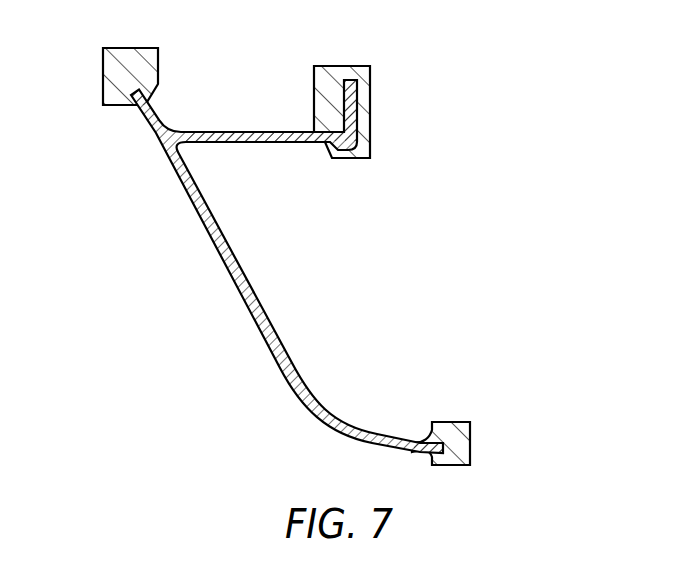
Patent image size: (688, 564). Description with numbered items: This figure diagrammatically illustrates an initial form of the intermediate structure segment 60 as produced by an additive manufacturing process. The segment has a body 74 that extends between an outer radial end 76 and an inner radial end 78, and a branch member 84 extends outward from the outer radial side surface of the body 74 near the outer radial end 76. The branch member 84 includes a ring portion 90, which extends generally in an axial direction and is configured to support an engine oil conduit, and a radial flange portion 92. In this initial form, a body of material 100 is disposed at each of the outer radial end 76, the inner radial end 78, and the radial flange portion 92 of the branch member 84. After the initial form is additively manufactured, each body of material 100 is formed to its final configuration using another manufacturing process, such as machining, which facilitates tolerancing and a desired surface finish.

The intermediate structure segment 60 is at (337, 243).
The body 74 is at (289, 256).
The outer radial end 76 is at (130, 90).
The inner radial end 78 is at (445, 449).
The branch member 84 is at (386, 104).
The ring portion 90 is at (278, 138).
The radial flange portion 92 is at (355, 90).
The body of material 100 is at (336, 235).